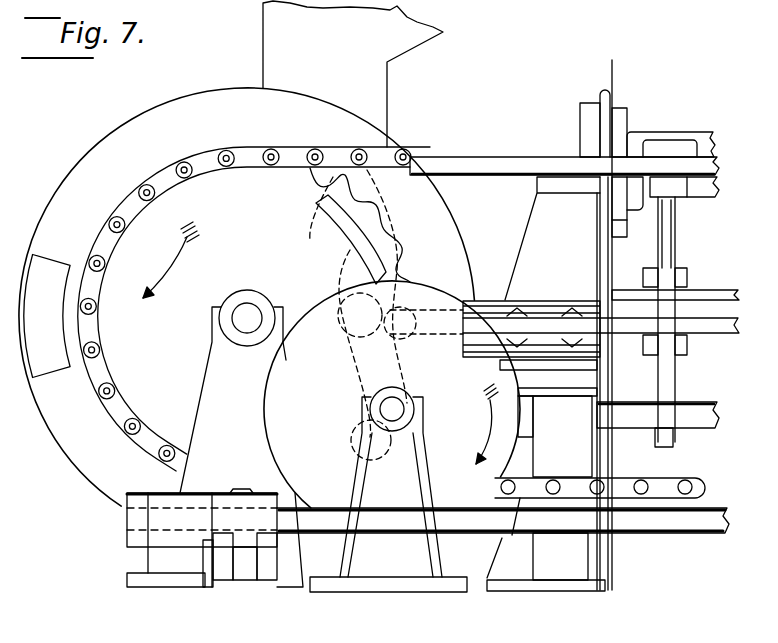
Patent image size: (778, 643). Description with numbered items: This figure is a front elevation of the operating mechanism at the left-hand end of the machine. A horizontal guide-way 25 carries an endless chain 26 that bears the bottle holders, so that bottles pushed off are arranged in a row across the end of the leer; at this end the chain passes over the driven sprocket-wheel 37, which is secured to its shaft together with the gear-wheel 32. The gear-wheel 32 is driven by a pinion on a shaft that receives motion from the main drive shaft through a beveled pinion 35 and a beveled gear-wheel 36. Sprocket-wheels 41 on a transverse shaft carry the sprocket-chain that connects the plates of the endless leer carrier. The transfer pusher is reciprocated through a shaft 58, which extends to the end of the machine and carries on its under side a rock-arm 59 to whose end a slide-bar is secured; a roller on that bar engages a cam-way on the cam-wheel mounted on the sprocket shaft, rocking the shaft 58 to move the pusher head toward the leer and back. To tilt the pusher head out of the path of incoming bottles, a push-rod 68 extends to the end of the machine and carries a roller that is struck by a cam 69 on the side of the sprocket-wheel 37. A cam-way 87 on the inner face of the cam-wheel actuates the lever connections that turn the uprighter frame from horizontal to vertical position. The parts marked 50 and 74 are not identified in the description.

The horizontal guide-way 25 is at (508, 176).
The endless chain 26 is at (126, 403).
The gear-wheel 32 is at (249, 313).
The beveled pinion 35 is at (600, 478).
The beveled gear-wheel 36 is at (466, 500).
The sprocket-wheel 37 is at (246, 297).
The sprocket-wheels 41 is at (668, 252).
The bracket 50 is at (696, 130).
The shaft 58 is at (645, 523).
The rock-arm 59 is at (277, 575).
The push-rod 68 is at (703, 338).
The cam 69 is at (345, 223).
The support bar 74 is at (696, 428).
The cam-way 87 is at (355, 320).